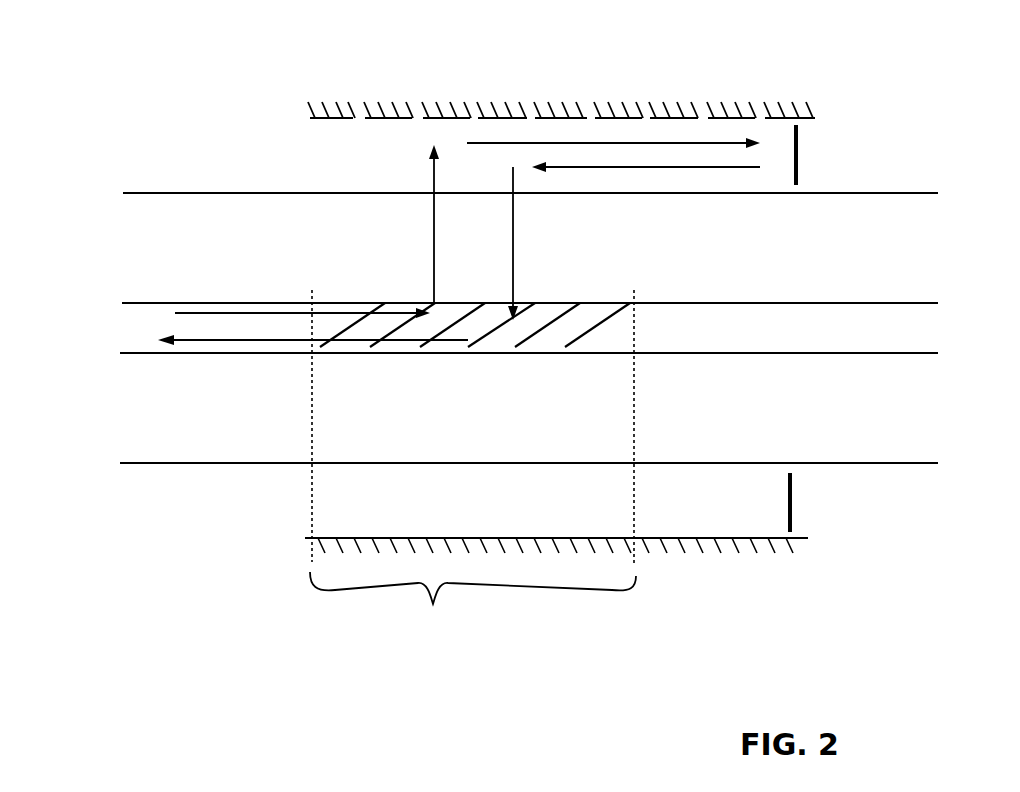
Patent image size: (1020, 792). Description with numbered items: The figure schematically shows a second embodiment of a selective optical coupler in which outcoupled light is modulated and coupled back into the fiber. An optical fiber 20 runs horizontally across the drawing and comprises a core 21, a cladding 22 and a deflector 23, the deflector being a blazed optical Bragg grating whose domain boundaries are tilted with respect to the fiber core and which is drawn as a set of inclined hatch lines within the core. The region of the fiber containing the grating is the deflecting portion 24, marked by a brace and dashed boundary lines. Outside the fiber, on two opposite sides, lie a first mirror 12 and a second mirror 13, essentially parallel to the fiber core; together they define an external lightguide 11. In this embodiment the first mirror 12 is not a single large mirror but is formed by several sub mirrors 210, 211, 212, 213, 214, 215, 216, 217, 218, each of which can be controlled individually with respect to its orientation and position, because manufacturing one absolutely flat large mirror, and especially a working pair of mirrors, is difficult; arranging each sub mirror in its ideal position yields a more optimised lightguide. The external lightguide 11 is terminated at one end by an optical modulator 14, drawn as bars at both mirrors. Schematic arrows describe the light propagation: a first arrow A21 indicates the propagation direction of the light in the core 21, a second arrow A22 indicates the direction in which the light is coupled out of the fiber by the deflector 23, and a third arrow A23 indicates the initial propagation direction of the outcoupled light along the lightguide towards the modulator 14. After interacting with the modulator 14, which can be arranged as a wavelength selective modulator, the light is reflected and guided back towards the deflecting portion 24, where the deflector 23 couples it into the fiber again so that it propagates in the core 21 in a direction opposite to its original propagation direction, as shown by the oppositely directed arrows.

The external lightguide 11 is at (678, 568).
The first mirror 12 is at (561, 73).
The second mirror 13 is at (800, 540).
The optical modulator 14 is at (798, 150).
The optical fiber 20 is at (128, 478).
The core 21 is at (128, 341).
The cladding 22 is at (137, 410).
The deflector 23 is at (372, 343).
The deflecting portion 24 is at (473, 463).
The sub mirror 210 is at (338, 116).
The sub mirror 211 is at (383, 118).
The sub mirror 212 is at (450, 116).
The sub mirror 213 is at (496, 118).
The sub mirror 214 is at (560, 116).
The sub mirror 215 is at (618, 116).
The sub mirror 216 is at (668, 116).
The sub mirror 217 is at (732, 118).
The sub mirror 218 is at (796, 116).
The first arrow A21 is at (205, 306).
The second arrow A22 is at (446, 232).
The third arrow A23 is at (613, 146).